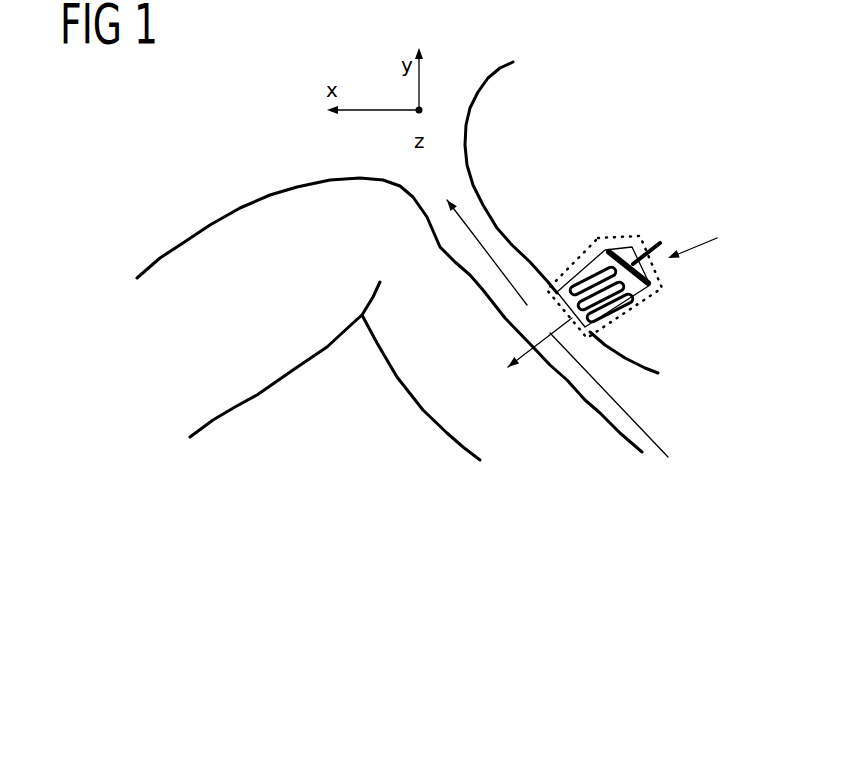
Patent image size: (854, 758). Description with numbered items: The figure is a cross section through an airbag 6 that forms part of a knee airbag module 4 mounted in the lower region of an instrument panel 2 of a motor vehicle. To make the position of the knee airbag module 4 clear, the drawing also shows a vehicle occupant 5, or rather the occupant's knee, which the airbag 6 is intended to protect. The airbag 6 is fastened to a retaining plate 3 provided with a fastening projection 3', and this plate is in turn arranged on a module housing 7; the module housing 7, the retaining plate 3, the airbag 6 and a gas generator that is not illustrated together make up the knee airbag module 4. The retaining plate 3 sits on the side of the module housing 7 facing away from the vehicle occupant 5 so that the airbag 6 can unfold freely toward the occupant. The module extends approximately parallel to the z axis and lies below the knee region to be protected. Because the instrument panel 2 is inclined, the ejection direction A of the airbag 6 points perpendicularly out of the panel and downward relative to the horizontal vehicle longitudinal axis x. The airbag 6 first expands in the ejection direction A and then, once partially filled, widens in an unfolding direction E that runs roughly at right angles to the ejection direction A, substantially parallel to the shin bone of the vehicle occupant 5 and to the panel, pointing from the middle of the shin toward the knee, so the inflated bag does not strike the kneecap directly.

The instrument panel 2 is at (475, 103).
The retaining plate 3 is at (636, 216).
The fastening projection 3' is at (680, 210).
The knee airbag module 4 is at (705, 236).
The vehicle occupant 5 is at (337, 333).
The airbag 6 is at (625, 290).
The module housing 7 is at (608, 325).
The unfolding direction E is at (413, 196).
The ejection direction A is at (621, 415).